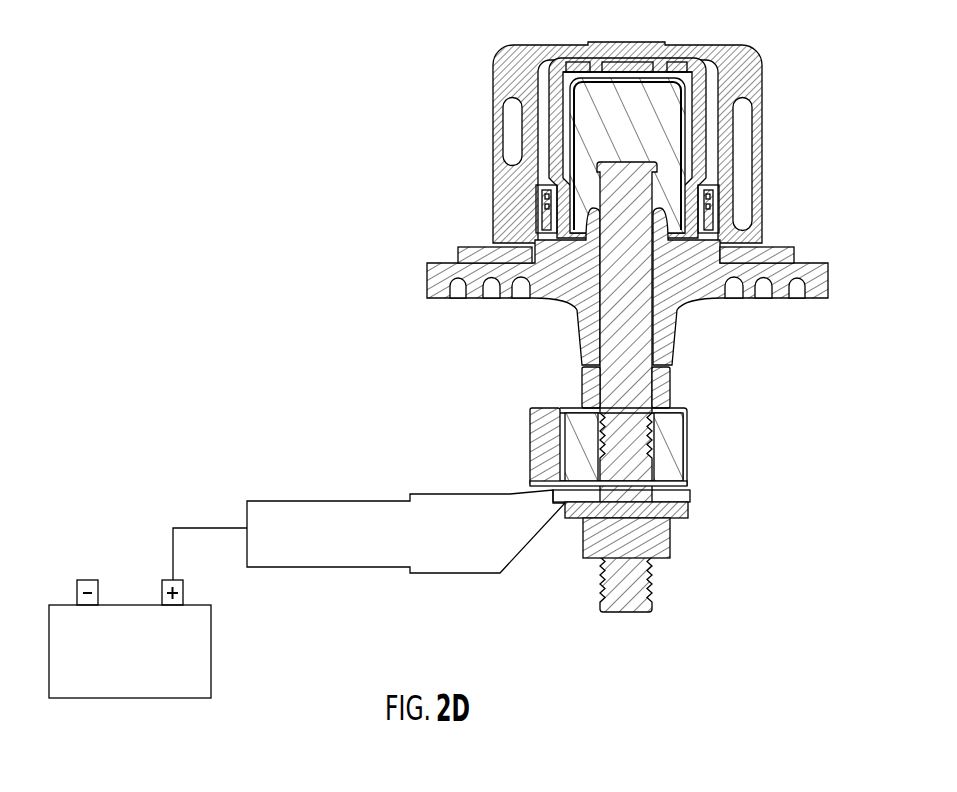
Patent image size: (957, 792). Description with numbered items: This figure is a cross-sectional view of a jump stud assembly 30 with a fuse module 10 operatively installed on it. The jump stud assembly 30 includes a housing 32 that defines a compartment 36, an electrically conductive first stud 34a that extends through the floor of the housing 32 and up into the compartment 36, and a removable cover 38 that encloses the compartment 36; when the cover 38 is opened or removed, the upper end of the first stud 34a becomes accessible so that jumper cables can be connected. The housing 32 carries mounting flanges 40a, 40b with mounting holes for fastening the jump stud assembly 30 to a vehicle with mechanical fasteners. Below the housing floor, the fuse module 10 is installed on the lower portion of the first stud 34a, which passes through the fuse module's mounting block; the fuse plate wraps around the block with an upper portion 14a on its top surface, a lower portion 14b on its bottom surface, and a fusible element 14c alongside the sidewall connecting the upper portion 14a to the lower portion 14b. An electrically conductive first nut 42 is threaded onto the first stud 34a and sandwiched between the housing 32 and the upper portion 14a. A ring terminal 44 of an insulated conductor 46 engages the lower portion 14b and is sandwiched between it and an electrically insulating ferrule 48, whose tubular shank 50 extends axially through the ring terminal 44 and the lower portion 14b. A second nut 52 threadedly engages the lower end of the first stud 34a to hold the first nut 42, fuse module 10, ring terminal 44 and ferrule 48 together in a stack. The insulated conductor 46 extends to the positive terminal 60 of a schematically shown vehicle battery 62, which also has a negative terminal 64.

The fuse module 10 is at (615, 464).
The upper portion 14a is at (575, 405).
The lower portion 14b is at (553, 485).
The fusible element 14c is at (550, 455).
The jump stud assembly 30 is at (626, 306).
The housing 32 is at (455, 300).
The first stud 34a is at (612, 185).
The compartment 36 is at (654, 94).
The removable cover 38 is at (530, 72).
The mounting flange 40a is at (435, 278).
The mounting flange 40b is at (813, 280).
The first nut 42 is at (663, 390).
The ring terminal 44 is at (680, 495).
The insulated conductor 46 is at (313, 517).
The ferrule 48 is at (688, 512).
The tubular shank 50 is at (647, 463).
The second nut 52 is at (670, 545).
The positive terminal 60 is at (162, 580).
The vehicle battery 62 is at (114, 668).
The negative terminal 64 is at (77, 580).